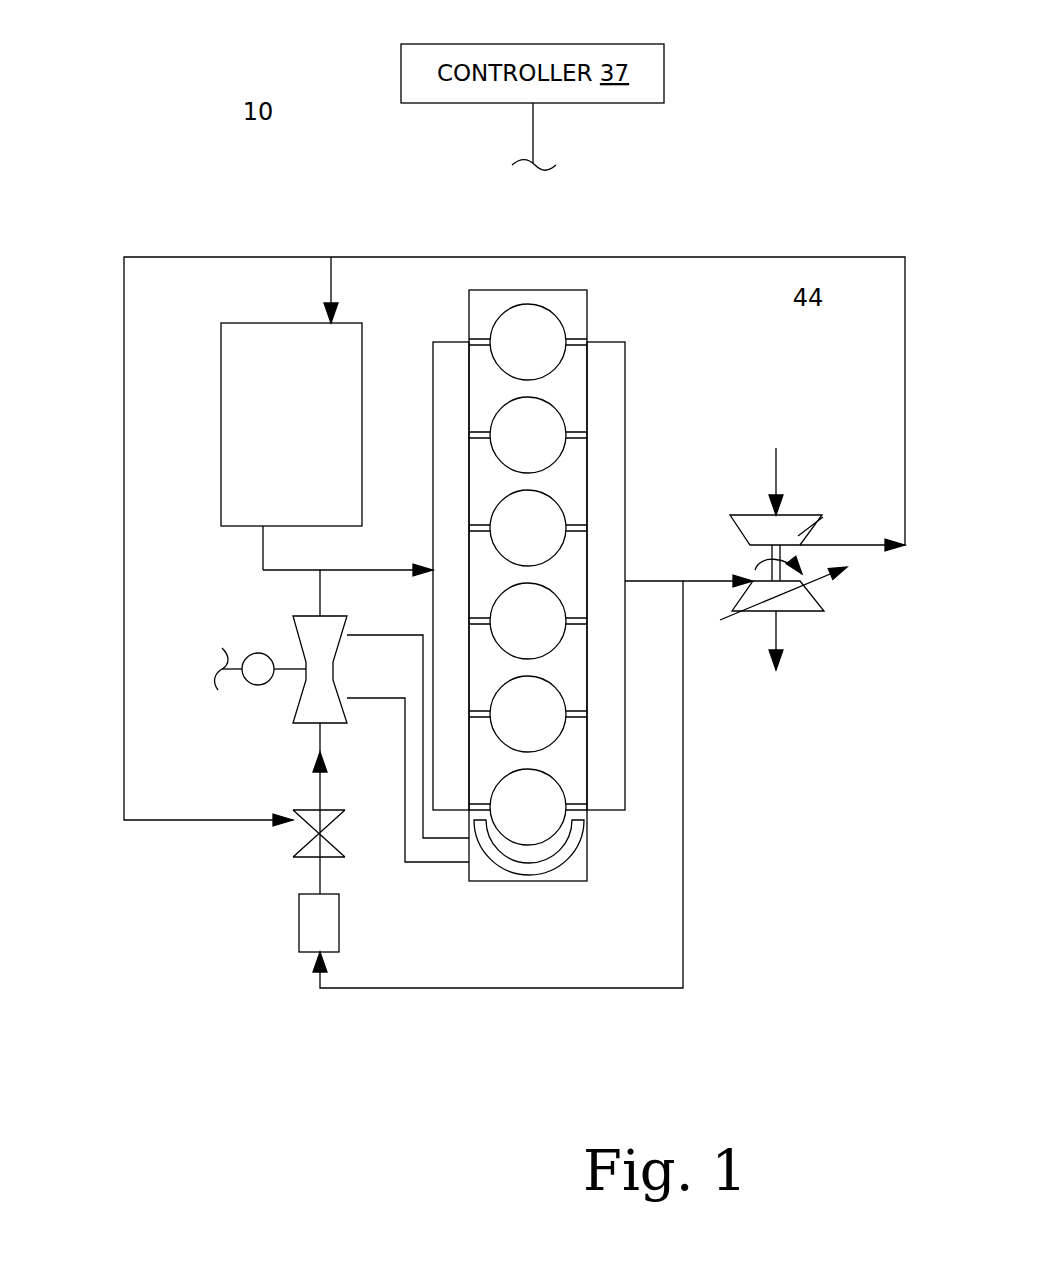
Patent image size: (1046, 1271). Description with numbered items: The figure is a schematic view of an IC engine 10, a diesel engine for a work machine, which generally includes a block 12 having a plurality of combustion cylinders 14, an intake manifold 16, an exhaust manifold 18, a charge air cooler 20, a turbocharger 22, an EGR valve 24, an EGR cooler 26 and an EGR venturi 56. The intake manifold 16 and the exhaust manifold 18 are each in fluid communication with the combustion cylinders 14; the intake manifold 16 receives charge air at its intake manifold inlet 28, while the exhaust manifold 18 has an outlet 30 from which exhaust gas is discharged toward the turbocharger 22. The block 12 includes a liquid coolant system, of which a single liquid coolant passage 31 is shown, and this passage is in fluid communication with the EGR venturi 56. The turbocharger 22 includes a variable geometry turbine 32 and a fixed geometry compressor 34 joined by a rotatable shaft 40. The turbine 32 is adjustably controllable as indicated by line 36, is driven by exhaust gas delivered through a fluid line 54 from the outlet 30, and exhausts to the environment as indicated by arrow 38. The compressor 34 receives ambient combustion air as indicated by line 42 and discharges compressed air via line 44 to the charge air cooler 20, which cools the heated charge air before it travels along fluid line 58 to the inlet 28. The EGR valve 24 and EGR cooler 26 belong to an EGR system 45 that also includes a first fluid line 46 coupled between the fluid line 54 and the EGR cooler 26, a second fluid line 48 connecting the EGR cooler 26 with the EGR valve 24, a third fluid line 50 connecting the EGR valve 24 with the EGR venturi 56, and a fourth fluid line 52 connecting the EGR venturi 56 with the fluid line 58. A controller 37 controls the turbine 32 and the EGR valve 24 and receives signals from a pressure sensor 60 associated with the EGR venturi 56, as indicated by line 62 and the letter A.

The IC engine 10 is at (330, 200).
The block 12 is at (498, 881).
The combustion cylinders 14 is at (528, 574).
The intake manifold 16 is at (433, 405).
The exhaust manifold 18 is at (625, 386).
The charge air cooler 20 is at (291, 424).
The turbocharger 22 is at (810, 561).
The EGR valve 24 is at (322, 833).
The EGR cooler 26 is at (319, 923).
The intake manifold inlet 28 is at (433, 568).
The outlet 30 is at (625, 581).
The liquid coolant passage 31 is at (560, 865).
The variable geometry turbine 32 is at (815, 588).
The compressor 34 is at (798, 536).
The line 36 is at (722, 618).
The controller 37 is at (532, 73).
The arrow 38 is at (782, 630).
The rotatable shaft 40 is at (772, 553).
The line 42 is at (776, 480).
The line 44 is at (905, 312).
The EGR system 45 is at (240, 905).
The first fluid line 46 is at (683, 868).
The second fluid line 48 is at (320, 877).
The third fluid line 50 is at (320, 792).
The fourth fluid line 52 is at (320, 597).
The fluid line 54 is at (652, 581).
The EGR venturi 56 is at (292, 715).
The fluid line 58 is at (263, 540).
The pressure sensor 60 is at (258, 653).
The line 62 is at (533, 137).